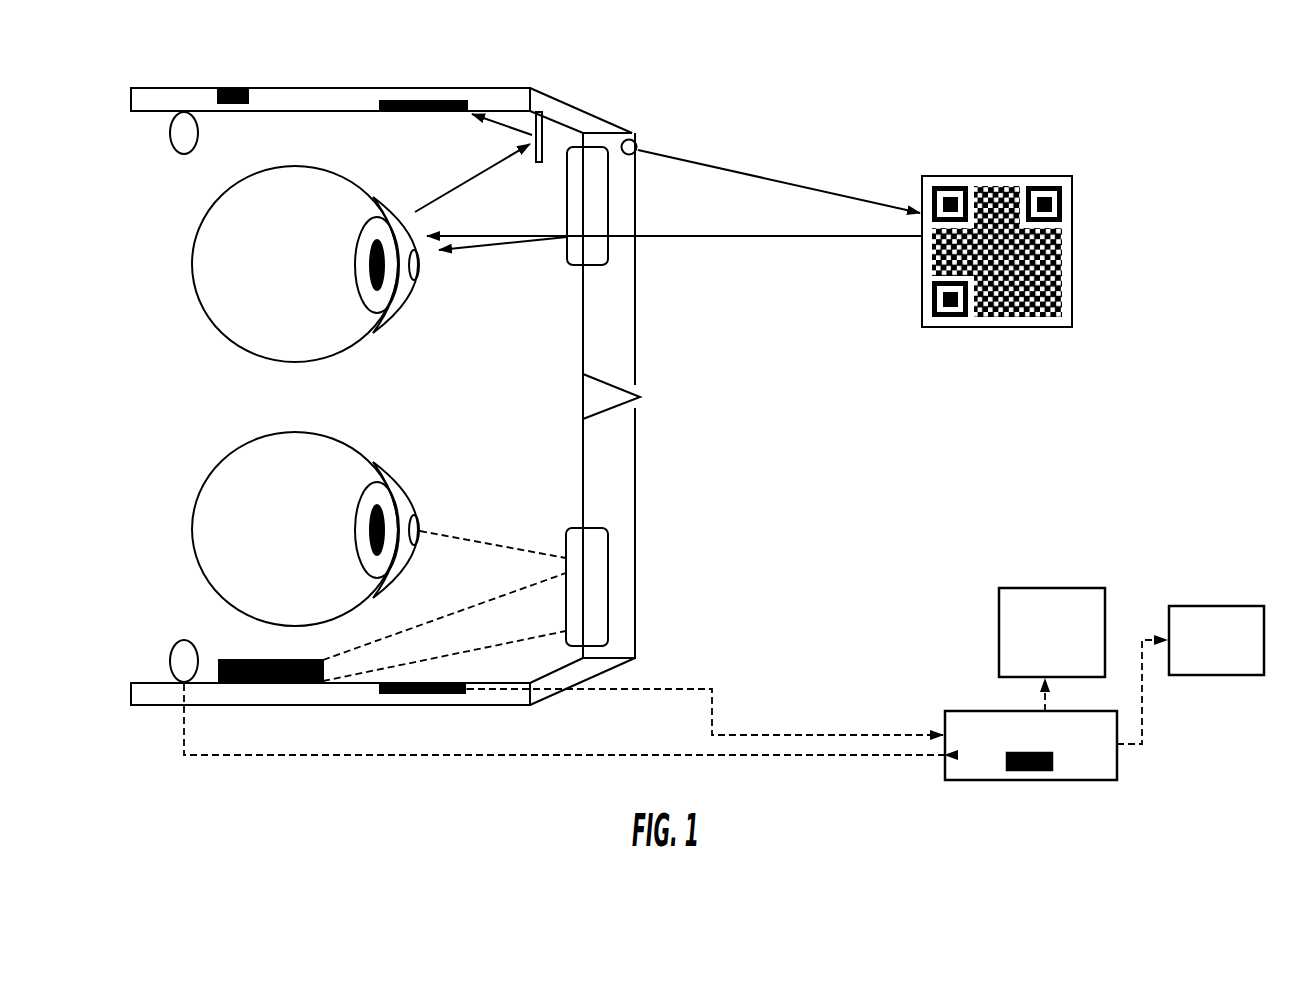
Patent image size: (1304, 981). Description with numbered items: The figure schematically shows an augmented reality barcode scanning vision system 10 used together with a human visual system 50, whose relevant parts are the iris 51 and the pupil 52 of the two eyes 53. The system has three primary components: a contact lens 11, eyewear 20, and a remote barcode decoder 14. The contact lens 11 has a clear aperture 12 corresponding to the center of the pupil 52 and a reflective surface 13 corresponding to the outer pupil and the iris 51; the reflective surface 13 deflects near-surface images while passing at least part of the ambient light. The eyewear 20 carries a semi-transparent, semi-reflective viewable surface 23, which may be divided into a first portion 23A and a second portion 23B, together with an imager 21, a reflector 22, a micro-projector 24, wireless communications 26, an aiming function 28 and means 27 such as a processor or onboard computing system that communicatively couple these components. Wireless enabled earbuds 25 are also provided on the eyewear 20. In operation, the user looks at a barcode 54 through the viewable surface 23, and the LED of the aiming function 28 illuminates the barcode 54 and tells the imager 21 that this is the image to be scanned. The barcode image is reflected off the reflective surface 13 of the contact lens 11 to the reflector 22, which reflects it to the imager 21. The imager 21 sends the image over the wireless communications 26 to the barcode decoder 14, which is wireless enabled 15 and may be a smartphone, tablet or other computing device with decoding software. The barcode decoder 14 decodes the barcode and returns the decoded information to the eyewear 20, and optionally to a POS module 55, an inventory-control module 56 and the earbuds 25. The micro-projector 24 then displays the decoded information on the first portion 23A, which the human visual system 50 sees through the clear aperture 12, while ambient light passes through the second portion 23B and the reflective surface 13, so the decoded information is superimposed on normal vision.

The augmented reality barcode scanning vision system 10 is at (1155, 158).
The contact lens 11 is at (447, 496).
The clear aperture 12 is at (434, 263).
The reflective surface 13 is at (423, 290).
The barcode decoder 14 is at (1105, 761).
The wireless enablement 15 is at (1060, 771).
The eyewear 20 is at (865, 186).
The imager 21 is at (377, 113).
The reflector 22 is at (553, 130).
The viewable surface 23 is at (623, 535).
The first portion of the viewable surface 23A is at (610, 253).
The second portion of the viewable surface 23B is at (595, 290).
The micro-projector 24 is at (238, 648).
The wireless enabled earbuds 25 is at (166, 133).
The wireless communications 26 is at (467, 680).
The means for communicatively coupling 27 is at (212, 102).
The aiming function 28 is at (650, 158).
The human visual system 50 is at (178, 471).
The iris 51 is at (372, 296).
The pupil 52 is at (345, 250).
The eyes 53 is at (235, 333).
The barcode 54 is at (1074, 299).
The POS module 55 is at (1236, 604).
The inventory-control module 56 is at (1062, 586).